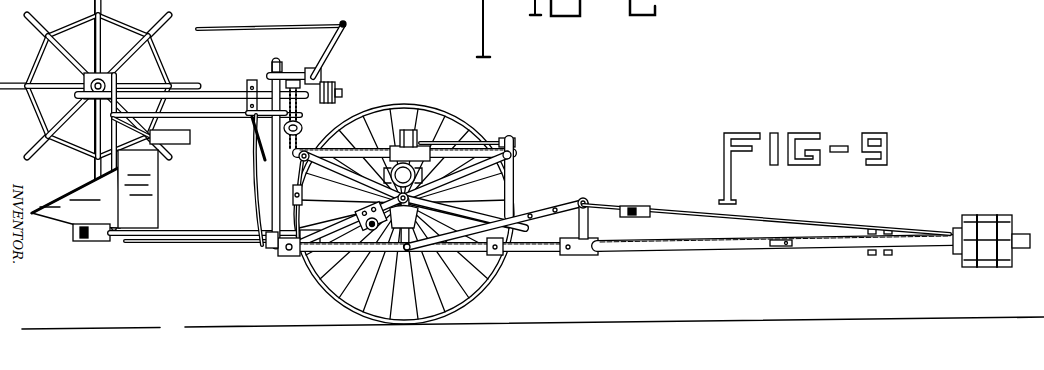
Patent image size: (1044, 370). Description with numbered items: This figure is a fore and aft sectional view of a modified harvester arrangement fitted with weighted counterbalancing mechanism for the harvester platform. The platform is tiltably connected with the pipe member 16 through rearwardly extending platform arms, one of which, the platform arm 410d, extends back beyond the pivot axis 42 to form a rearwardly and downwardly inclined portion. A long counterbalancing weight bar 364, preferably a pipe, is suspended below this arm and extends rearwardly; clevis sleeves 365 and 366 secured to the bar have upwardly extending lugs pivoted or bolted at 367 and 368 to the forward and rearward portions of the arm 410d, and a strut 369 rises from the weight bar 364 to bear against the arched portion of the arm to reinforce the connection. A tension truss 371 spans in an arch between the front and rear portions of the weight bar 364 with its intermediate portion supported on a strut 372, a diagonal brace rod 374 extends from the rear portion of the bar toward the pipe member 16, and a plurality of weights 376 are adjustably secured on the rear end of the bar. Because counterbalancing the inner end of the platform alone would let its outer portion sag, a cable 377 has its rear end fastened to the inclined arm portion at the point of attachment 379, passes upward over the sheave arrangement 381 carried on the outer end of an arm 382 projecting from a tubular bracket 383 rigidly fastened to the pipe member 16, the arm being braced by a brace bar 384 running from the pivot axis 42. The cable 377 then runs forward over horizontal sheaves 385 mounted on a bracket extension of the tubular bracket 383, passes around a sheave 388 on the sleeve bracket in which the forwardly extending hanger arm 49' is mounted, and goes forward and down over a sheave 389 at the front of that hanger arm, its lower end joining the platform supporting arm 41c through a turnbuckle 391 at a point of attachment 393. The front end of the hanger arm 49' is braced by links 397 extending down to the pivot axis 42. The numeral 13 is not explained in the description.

The bracket 13 is at (402, 130).
The horizontal sheaves 385 is at (408, 145).
The tubular bracket 383 is at (432, 146).
The cable 377 is at (450, 128).
The sheave 388 is at (462, 140).
The arm 382 is at (506, 140).
The sheave arrangement 381 is at (512, 152).
The brace bar 384 is at (514, 171).
The hanger arm 49' is at (310, 132).
The pipe member 16 is at (392, 163).
The sheave 389 is at (290, 150).
The turnbuckle 391 is at (298, 197).
The links 397 is at (317, 201).
The platform supporting arm 41c is at (318, 224).
The pivot axis 42 is at (500, 197).
The platform arm 410d is at (264, 247).
The pivot connection 367 is at (282, 250).
The clevis sleeve 365 is at (272, 250).
The point of attachment 393 is at (294, 242).
The strut 369 is at (345, 300).
The point of attachment 379 is at (517, 225).
The pivot connection 368 is at (505, 247).
The clevis sleeve 366 is at (506, 258).
The strut 372 is at (590, 226).
The tension truss 371 is at (662, 216).
The counterbalancing weight bar 364 is at (676, 252).
The diagonal brace rod 374 is at (740, 248).
The weights 376 is at (1002, 218).